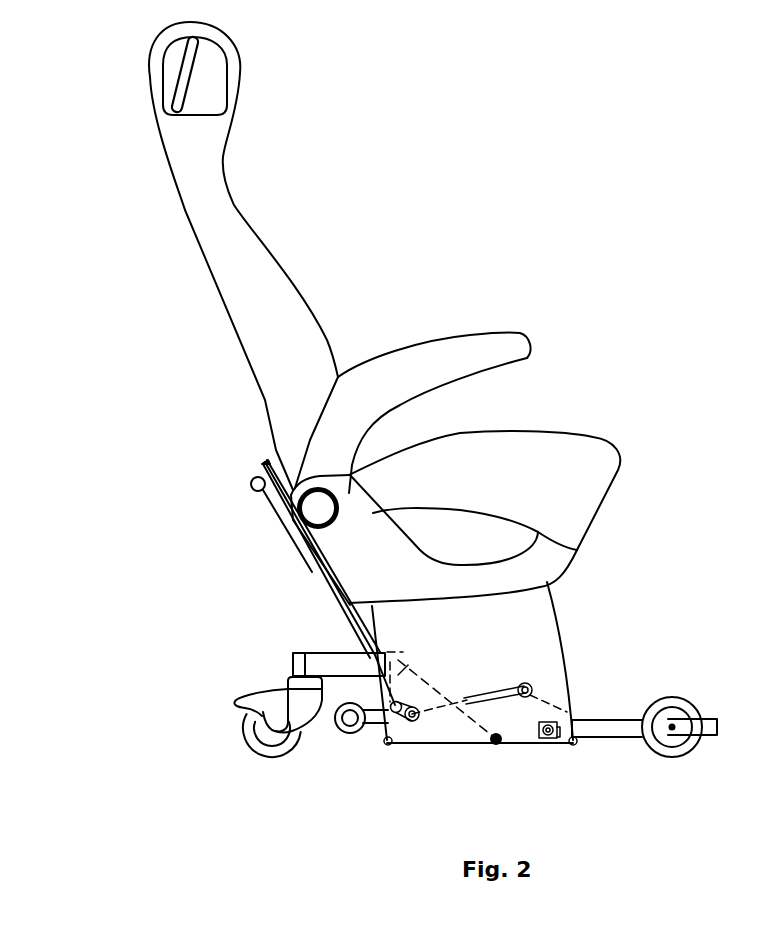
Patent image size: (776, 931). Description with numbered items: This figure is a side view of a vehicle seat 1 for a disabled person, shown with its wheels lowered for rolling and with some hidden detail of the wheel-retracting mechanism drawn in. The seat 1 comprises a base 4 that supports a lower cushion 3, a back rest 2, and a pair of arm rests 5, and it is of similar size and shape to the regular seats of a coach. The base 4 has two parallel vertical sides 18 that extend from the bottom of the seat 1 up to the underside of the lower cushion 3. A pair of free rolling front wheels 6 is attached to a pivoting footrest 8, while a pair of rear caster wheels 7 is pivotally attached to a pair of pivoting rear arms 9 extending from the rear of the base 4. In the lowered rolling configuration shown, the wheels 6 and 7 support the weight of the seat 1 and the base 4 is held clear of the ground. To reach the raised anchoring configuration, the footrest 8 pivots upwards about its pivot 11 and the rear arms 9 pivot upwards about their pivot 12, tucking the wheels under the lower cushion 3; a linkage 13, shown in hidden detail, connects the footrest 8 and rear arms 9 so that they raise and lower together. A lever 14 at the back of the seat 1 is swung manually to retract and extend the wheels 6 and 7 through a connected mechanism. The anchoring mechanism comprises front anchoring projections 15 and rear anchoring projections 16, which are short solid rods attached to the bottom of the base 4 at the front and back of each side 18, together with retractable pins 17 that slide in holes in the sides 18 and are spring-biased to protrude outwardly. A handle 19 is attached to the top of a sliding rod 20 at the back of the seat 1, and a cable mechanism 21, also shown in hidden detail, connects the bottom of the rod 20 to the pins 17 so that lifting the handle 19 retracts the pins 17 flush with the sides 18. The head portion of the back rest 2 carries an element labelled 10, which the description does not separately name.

The vehicle seat 1 is at (596, 159).
The back rest 2 is at (240, 100).
The lower cushion 3 is at (597, 444).
The base 4 is at (556, 612).
The arm rest 5 is at (522, 334).
The front wheel 6 is at (691, 753).
The rear caster wheel 7 is at (272, 757).
The footrest 8 is at (606, 721).
The rear arm 9 is at (293, 664).
The headrest insert 10 is at (167, 73).
The pivot 11 is at (557, 746).
The pivot 12 is at (403, 722).
The linkage 13 is at (437, 713).
The lever 14 is at (251, 484).
The front anchoring projection 15 is at (574, 746).
The rear anchoring projection 16 is at (388, 745).
The retractable pin 17 is at (498, 745).
The side 18 is at (547, 660).
The handle 19 is at (262, 463).
The sliding rod 20 is at (312, 562).
The cable mechanism 21 is at (463, 722).